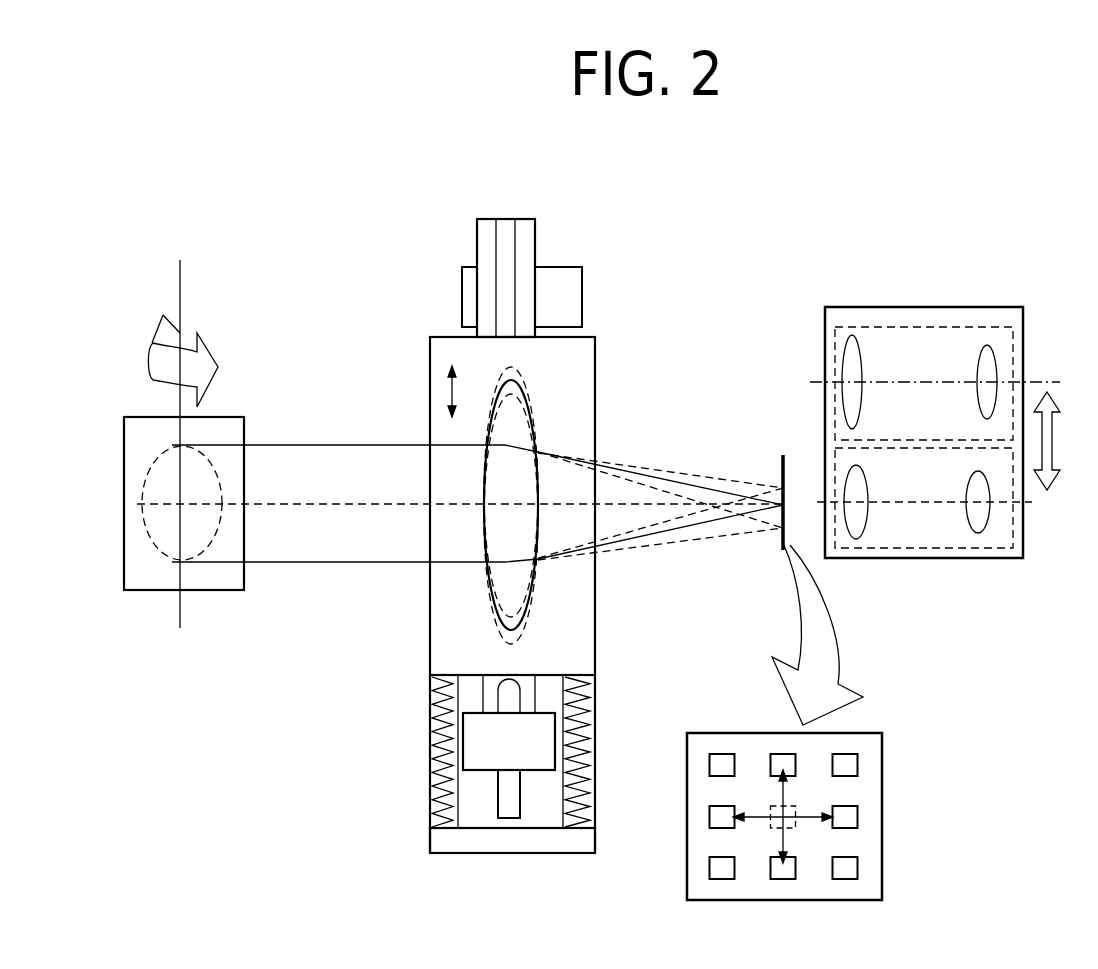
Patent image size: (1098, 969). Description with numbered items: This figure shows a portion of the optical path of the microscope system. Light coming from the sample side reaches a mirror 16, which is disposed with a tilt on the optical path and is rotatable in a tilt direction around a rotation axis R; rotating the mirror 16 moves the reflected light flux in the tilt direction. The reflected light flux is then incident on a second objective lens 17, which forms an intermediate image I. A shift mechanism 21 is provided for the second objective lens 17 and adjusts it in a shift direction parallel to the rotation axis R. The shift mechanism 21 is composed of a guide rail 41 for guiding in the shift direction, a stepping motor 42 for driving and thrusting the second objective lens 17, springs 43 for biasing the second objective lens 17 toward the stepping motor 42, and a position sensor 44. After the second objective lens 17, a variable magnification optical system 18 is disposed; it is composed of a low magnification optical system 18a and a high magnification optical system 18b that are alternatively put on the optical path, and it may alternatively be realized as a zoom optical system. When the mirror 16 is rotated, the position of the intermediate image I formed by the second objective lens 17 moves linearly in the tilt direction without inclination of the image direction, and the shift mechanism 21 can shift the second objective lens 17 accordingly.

The mirror 16 is at (138, 515).
The second objective lens 17 is at (487, 604).
The variable magnification optical system 18 is at (935, 423).
The low magnification optical system 18a is at (920, 360).
The high magnification optical system 18b is at (944, 530).
The shift mechanism 21 is at (650, 218).
The guide rail 41 is at (503, 218).
The stepping motor 42 is at (509, 746).
The springs 43 is at (445, 826).
The position sensor 44 is at (582, 298).
The intermediate image I is at (783, 456).